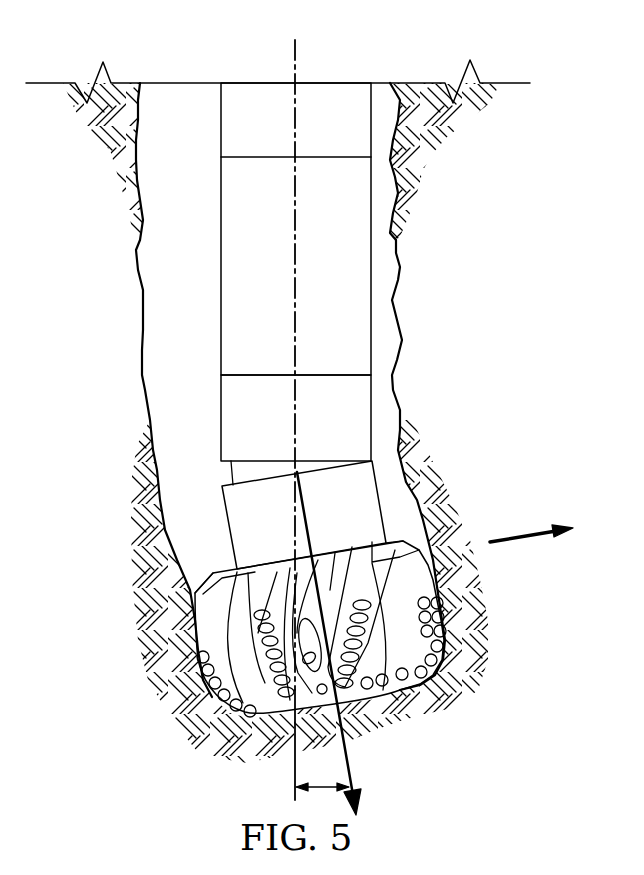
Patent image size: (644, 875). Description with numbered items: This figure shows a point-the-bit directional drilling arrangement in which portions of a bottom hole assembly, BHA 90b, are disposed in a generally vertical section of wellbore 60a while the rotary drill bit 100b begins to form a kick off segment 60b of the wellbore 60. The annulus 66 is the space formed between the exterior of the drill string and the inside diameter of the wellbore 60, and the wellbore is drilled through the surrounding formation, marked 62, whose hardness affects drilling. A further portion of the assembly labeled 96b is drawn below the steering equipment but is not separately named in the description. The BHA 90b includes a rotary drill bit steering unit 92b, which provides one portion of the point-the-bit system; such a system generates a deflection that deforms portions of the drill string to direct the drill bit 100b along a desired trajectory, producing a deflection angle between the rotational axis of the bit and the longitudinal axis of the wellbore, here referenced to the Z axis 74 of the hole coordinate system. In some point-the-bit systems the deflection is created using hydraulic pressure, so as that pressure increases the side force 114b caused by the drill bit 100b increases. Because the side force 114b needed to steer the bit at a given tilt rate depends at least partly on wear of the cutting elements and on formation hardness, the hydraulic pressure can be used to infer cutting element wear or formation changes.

The wellbore 60 is at (120, 388).
The generally vertical section of wellbore 60a is at (386, 135).
The kick off segment 60b is at (400, 490).
The subterranean formation 62 is at (348, 703).
The annulus 66 is at (178, 100).
The Z axis 74 is at (297, 63).
The BHA 90b is at (163, 300).
The rotary drill bit steering unit 92b is at (372, 262).
The lower drill string section 96b is at (372, 397).
The rotary drill bit 100b is at (197, 582).
The side force 114b is at (520, 537).